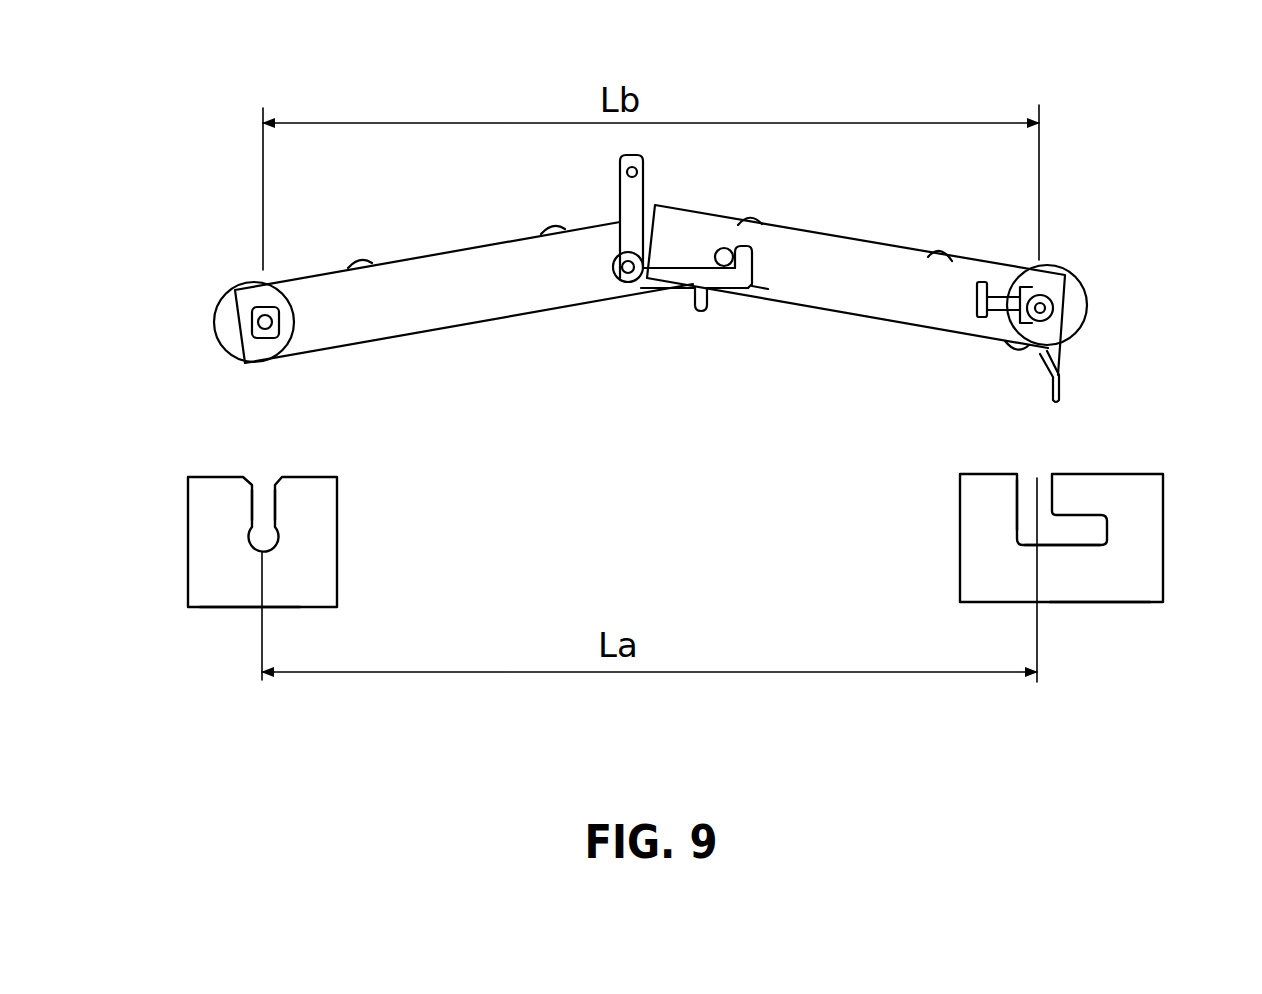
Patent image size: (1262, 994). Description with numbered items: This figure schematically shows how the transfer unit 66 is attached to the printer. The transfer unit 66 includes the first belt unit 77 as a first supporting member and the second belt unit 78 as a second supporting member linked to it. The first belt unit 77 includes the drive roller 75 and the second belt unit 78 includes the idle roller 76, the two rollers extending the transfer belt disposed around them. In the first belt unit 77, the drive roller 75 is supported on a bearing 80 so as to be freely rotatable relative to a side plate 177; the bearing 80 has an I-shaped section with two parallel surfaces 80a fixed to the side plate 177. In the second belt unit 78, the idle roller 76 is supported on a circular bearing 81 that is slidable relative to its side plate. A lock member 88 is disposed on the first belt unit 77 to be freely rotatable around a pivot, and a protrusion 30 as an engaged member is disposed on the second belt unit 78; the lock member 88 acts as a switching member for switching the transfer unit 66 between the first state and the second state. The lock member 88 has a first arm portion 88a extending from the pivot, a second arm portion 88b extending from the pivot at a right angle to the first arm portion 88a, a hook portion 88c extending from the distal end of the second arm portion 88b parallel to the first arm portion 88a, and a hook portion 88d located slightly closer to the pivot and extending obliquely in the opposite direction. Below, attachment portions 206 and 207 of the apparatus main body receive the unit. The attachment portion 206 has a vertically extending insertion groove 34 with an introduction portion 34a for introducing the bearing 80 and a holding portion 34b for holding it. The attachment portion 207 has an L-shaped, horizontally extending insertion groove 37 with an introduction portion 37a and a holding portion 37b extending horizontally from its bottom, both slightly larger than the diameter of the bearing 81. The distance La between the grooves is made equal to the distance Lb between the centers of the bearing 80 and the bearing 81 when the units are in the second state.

The transfer unit 66 is at (793, 152).
The drive roller 75 is at (223, 293).
The idle roller 76 is at (1057, 265).
The first belt unit 77 is at (418, 253).
The second belt unit 78 is at (897, 243).
The bearing 80 is at (270, 303).
The parallel surfaces 80a is at (232, 326).
The bearing 81 is at (1083, 317).
The lock member 88 is at (607, 282).
The first arm portion 88a is at (633, 187).
The second arm portion 88b is at (657, 273).
The hook portion 88c is at (748, 248).
The hook portion 88d is at (705, 312).
The protrusion 30 is at (760, 292).
The side plate 177 is at (477, 308).
The insertion groove 34 is at (250, 547).
The introduction portion 34a is at (263, 502).
The holding portion 34b is at (273, 550).
The attachment portion 206 is at (243, 618).
The insertion groove 37 is at (1093, 547).
The introduction portion 37a is at (1033, 500).
The holding portion 37b is at (1063, 537).
The attachment portion 207 is at (1113, 622).